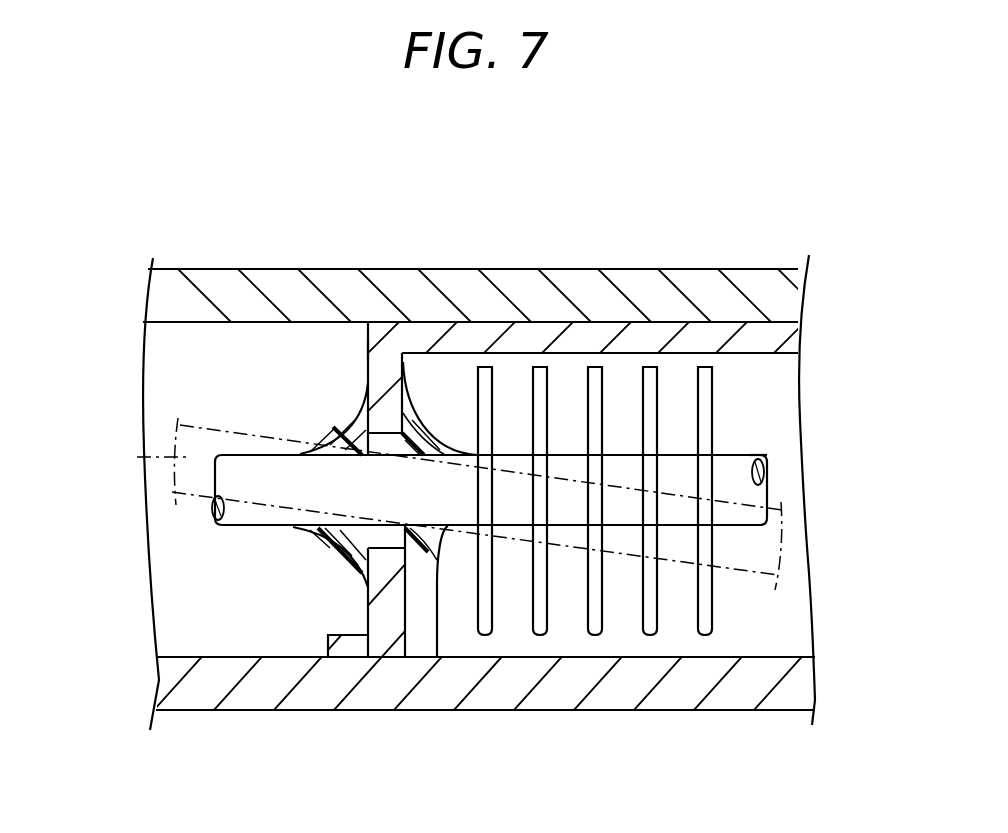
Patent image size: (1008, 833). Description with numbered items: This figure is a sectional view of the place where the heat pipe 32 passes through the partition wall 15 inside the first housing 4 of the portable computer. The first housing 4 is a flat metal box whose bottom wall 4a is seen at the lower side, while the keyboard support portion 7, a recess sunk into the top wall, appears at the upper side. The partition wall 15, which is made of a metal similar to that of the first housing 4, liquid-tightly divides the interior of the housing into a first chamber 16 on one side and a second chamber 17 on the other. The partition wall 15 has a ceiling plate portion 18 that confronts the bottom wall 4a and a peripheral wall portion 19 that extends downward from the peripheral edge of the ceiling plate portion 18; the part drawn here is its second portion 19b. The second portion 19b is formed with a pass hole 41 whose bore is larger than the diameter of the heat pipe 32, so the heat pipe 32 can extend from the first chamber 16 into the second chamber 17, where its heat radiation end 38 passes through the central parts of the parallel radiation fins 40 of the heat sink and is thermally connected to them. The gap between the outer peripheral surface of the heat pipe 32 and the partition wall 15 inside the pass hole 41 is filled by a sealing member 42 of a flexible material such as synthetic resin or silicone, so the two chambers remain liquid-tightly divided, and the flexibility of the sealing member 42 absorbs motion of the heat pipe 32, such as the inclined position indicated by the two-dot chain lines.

The first housing 4 is at (167, 300).
The bottom wall 4a is at (740, 697).
The keyboard support portion 7 is at (762, 284).
The partition wall 15 is at (362, 350).
The first chamber 16 is at (186, 596).
The second chamber 17 is at (785, 381).
The ceiling plate portion 18 is at (605, 343).
The peripheral wall portion 19 is at (368, 372).
The second portion 19b is at (368, 604).
The heat pipe 32 is at (226, 476).
The heat radiation end 38 is at (730, 456).
The radiation fins 40 is at (540, 367).
The pass hole 41 is at (392, 432).
The sealing member 42 is at (437, 657).